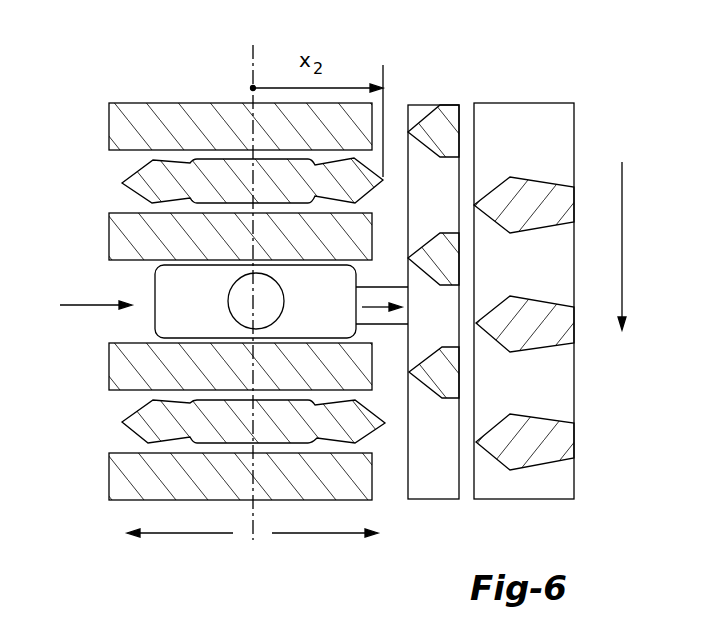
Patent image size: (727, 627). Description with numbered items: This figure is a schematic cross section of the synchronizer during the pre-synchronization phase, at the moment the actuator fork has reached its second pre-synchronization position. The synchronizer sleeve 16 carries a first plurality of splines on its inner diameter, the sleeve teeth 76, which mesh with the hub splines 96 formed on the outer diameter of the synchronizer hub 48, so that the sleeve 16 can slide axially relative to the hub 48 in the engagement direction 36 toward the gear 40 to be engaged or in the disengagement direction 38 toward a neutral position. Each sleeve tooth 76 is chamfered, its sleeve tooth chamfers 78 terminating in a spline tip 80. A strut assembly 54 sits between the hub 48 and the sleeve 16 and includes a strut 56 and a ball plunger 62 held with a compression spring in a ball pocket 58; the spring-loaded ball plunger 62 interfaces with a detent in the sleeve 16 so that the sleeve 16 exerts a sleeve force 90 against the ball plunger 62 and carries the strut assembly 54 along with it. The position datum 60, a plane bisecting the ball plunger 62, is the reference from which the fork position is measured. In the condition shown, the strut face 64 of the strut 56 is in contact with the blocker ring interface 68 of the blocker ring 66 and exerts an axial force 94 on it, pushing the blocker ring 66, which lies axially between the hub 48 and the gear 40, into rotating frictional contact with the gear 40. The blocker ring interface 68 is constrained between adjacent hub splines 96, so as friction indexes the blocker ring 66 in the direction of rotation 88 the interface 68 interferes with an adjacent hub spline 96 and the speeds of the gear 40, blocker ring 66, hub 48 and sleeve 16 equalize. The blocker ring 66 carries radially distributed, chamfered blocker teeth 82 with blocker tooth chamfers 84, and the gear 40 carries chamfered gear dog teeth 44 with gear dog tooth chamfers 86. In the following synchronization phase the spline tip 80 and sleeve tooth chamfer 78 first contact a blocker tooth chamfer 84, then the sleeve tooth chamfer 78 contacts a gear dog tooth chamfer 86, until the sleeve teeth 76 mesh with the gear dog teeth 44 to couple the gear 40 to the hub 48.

The synchronizer sleeve 16 is at (115, 168).
The engagement direction 36 is at (318, 533).
The disengagement direction 38 is at (200, 533).
The gear 40 is at (550, 518).
The gear dog teeth 44 is at (547, 180).
The synchronizer hub 48 is at (100, 118).
The strut assembly 54 is at (105, 277).
The strut 56 is at (155, 316).
The ball pocket 58 is at (276, 318).
The position datum 60 is at (253, 58).
The ball plunger 62 is at (228, 300).
The strut face 64 is at (358, 278).
The blocker ring 66 is at (447, 523).
The blocker ring interface 68 is at (356, 310).
The sleeve teeth 76 is at (115, 188).
The sleeve tooth chamfer 78 is at (368, 197).
The spline tip 80 is at (383, 178).
The blocker teeth 82 is at (461, 130).
The blocker tooth chamfer 84 is at (425, 147).
The gear dog tooth chamfer 86 is at (498, 187).
The direction of rotation 88 is at (623, 218).
The sleeve force 90 is at (68, 305).
The axial force 94 is at (377, 312).
The hub splines 96 is at (125, 103).